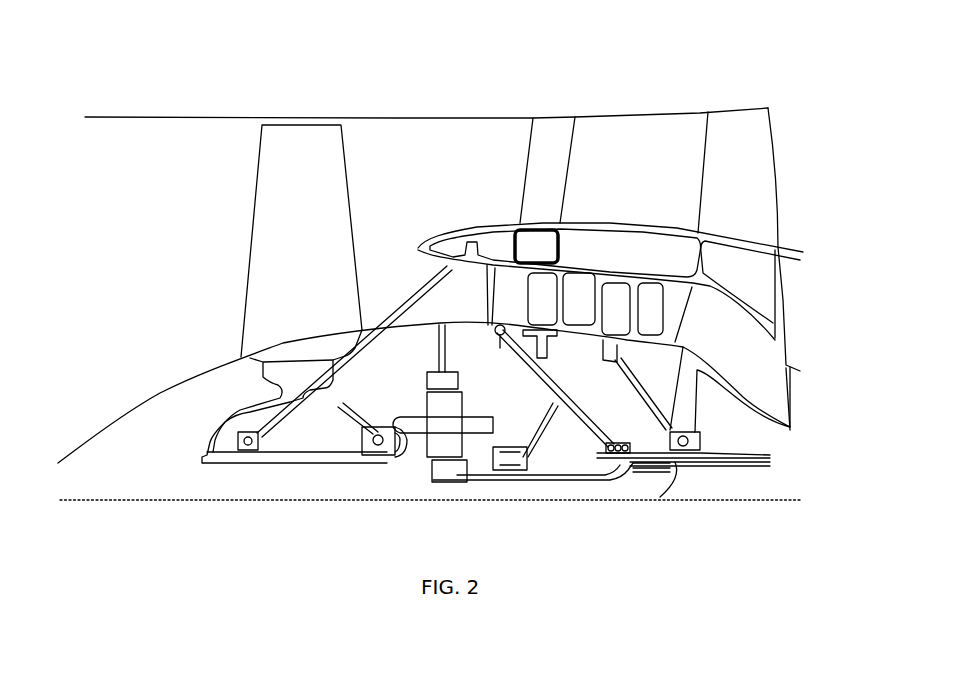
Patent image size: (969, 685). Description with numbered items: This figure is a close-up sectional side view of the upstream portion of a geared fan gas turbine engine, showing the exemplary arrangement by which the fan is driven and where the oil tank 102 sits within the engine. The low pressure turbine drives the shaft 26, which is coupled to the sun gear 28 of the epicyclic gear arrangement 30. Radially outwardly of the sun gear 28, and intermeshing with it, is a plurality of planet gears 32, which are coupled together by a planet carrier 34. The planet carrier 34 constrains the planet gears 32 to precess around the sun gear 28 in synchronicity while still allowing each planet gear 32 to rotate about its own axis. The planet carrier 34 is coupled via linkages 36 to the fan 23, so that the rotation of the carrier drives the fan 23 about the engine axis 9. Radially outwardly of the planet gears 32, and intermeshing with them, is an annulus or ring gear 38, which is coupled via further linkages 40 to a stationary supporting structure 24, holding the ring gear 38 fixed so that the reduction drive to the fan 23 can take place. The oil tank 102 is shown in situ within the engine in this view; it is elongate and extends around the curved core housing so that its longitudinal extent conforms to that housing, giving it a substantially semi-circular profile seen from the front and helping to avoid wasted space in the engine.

The engine axis 9 is at (210, 502).
The fan 23 is at (270, 277).
The stationary supporting structure 24 is at (453, 290).
The shaft 26 is at (563, 482).
The sun gear 28 is at (443, 473).
The epicyclic gear arrangement 30 is at (408, 445).
The planet gears 32 is at (430, 445).
The planet carrier 34 is at (487, 452).
The linkages 36 is at (380, 467).
The ring gear 38 is at (425, 383).
The linkages 40 is at (447, 347).
The oil tank 102 is at (543, 225).